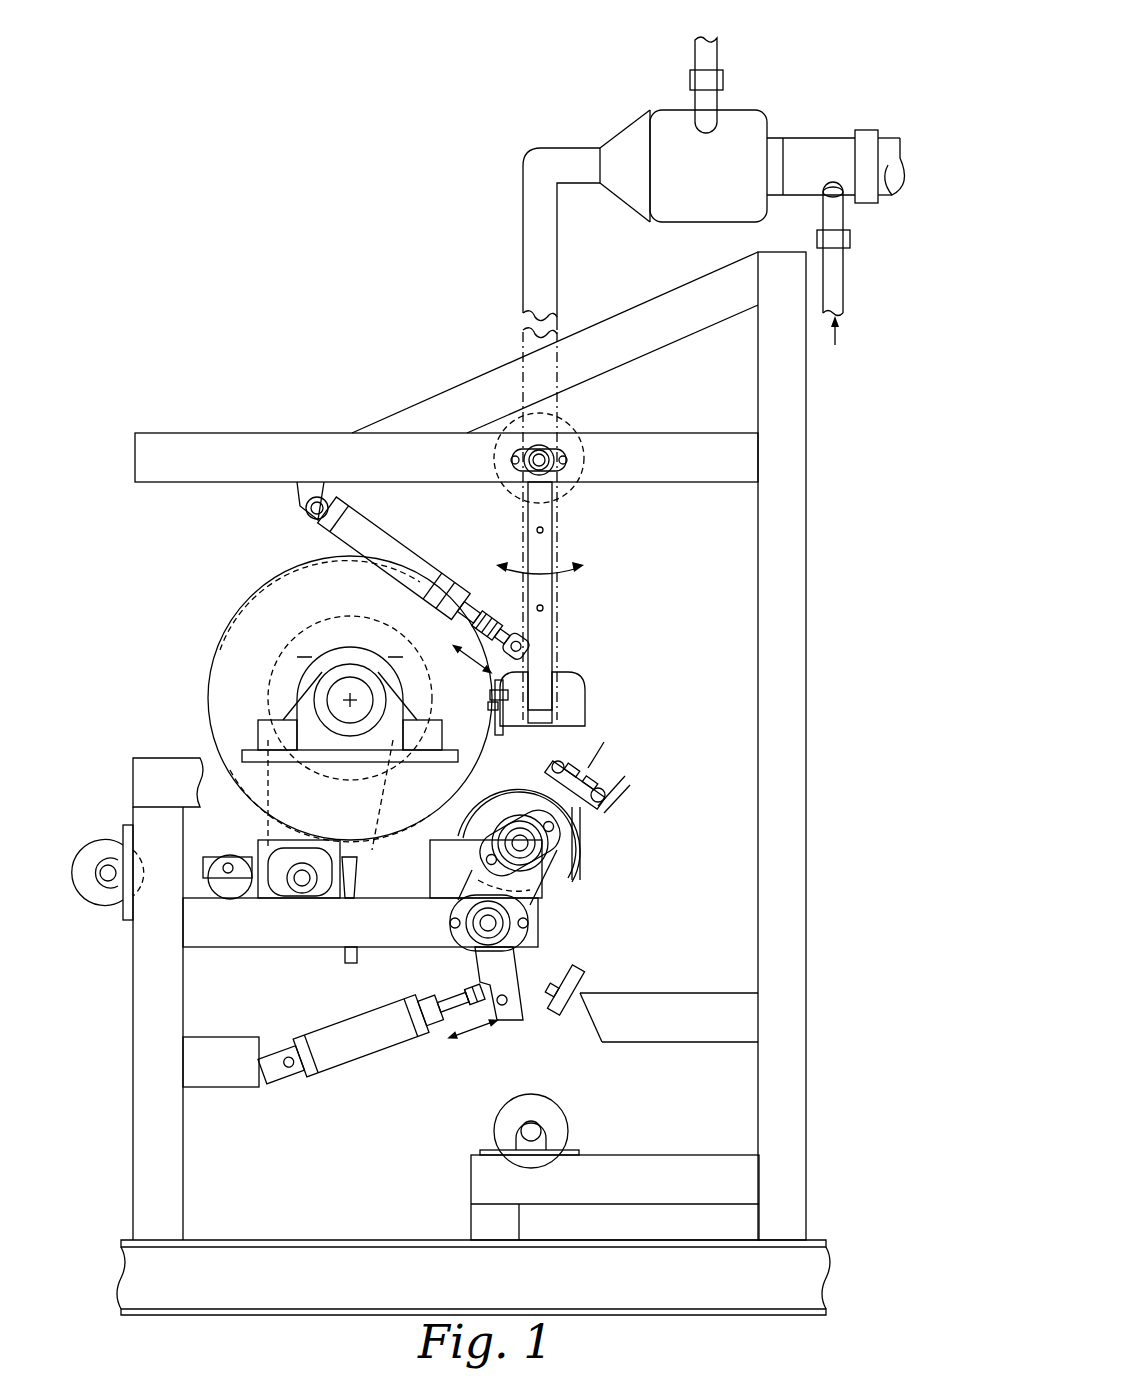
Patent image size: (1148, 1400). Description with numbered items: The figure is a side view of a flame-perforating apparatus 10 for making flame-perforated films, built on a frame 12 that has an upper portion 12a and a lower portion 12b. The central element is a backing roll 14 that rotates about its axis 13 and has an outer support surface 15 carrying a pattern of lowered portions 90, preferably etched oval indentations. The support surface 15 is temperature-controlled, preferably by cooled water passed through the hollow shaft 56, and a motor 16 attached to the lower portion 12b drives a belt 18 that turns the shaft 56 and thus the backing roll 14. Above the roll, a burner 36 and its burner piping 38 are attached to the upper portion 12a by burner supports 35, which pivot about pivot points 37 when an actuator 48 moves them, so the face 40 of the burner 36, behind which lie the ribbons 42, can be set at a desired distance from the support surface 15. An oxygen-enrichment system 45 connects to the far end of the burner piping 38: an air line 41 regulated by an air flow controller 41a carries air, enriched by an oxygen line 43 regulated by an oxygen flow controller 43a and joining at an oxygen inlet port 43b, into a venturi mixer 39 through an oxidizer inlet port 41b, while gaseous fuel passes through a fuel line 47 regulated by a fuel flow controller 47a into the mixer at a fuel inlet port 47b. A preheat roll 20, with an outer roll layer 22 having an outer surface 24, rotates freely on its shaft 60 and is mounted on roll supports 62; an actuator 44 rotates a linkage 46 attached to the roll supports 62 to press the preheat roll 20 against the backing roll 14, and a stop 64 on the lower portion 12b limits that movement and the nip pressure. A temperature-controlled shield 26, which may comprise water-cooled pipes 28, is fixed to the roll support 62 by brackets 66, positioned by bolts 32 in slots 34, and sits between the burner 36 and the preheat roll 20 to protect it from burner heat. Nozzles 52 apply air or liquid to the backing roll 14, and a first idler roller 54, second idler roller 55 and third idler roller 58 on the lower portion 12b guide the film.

The apparatus 10 is at (202, 288).
The frame 12 is at (807, 518).
The upper portion 12a is at (656, 443).
The lower portion 12b is at (200, 940).
The axis 13 is at (348, 696).
The backing roll 14 is at (224, 620).
The support surface 15 is at (282, 565).
The motor 16 is at (262, 846).
The belt 18 is at (272, 770).
The preheat roll 20 is at (458, 836).
The outer roll layer 22 is at (500, 830).
The outer surface 24 is at (490, 798).
The temperature-controlled shield 26 is at (546, 768).
The water-cooled pipes 28 is at (581, 749).
The bolts 32 is at (604, 800).
The slots 34 is at (579, 857).
The burner supports 35 is at (560, 600).
The burner 36 is at (566, 664).
The pivot points 37 is at (548, 468).
The burner piping 38 is at (522, 242).
The venturi mixer 39 is at (676, 214).
The face 40 is at (494, 694).
The air line 41 is at (880, 190).
The air flow controller 41a is at (864, 130).
The oxidizer inlet port 41b is at (775, 175).
The ribbons 42 is at (492, 712).
The oxygen line 43 is at (842, 302).
The oxygen flow controller 43a is at (848, 240).
The oxygen inlet port 43b is at (833, 183).
The actuator 44 is at (355, 1025).
The oxygen-enrichment system 45 is at (510, 140).
The linkage 46 is at (478, 965).
The fuel line 47 is at (706, 36).
The fuel flow controller 47a is at (690, 80).
The fuel inlet port 47b is at (710, 124).
The actuator 48 is at (410, 548).
The nozzles 52 is at (357, 878).
The first idler roller 54 is at (531, 1098).
The second idler roller 55 is at (232, 892).
The hollow shaft 56 is at (312, 672).
The third idler roller 58 is at (100, 850).
The shaft 60 is at (498, 852).
The roll supports 62 is at (462, 912).
The stop 64 is at (578, 985).
The brackets 66 is at (602, 832).
The lowered portions 90 is at (208, 662).